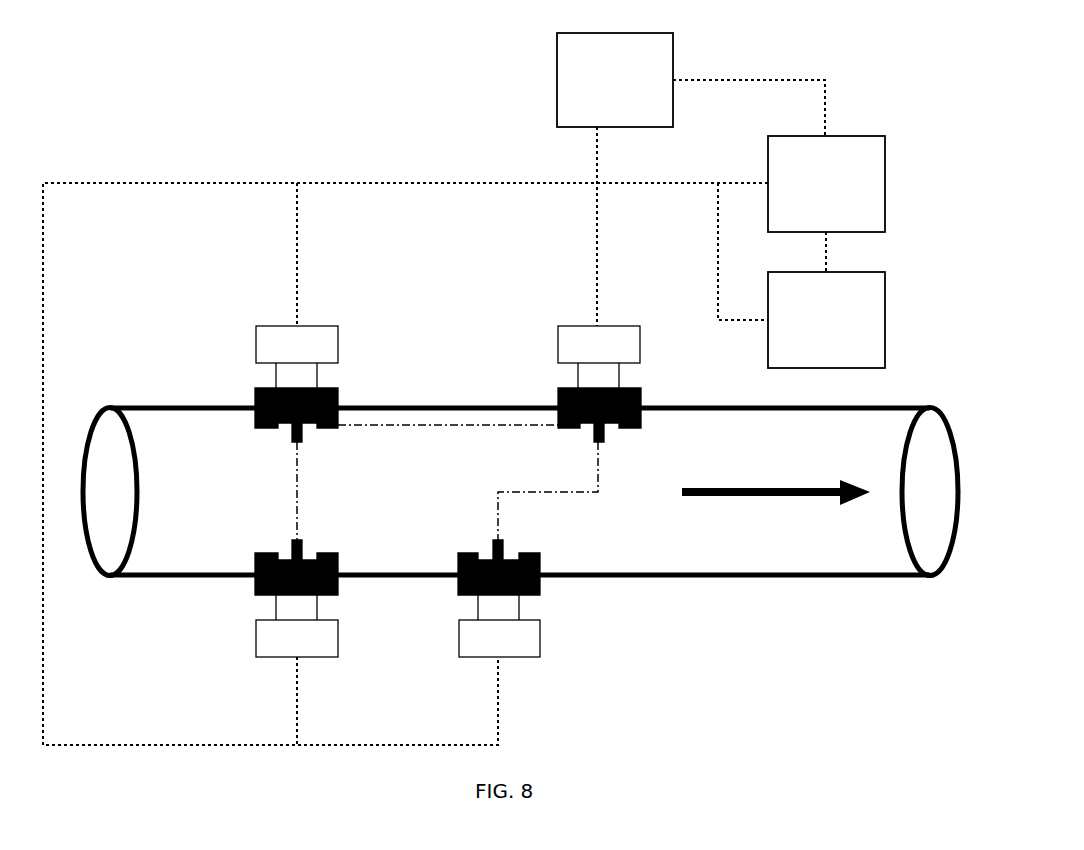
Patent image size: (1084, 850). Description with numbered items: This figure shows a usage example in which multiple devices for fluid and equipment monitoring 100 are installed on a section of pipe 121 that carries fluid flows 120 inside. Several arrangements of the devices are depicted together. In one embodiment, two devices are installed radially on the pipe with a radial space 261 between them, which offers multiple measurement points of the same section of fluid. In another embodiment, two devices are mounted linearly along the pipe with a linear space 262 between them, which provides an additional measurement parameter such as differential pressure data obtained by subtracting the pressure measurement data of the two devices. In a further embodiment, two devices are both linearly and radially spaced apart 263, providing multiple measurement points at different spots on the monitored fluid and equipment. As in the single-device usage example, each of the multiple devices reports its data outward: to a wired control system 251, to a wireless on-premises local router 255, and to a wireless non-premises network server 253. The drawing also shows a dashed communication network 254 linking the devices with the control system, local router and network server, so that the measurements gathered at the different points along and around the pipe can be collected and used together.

The device for fluid and equipment monitoring 100 is at (338, 340).
The fluid flow 120 is at (682, 492).
The section of pipe 121 is at (190, 405).
The wired control system 251 is at (873, 338).
The wireless non-premises network server 253 is at (557, 99).
The communication network bus 254 is at (336, 183).
The wireless on-premises local router 255 is at (870, 190).
The radial space 261 is at (300, 494).
The linear space 262 is at (445, 426).
The linearly and radially spaced apart arrangement 263 is at (553, 494).